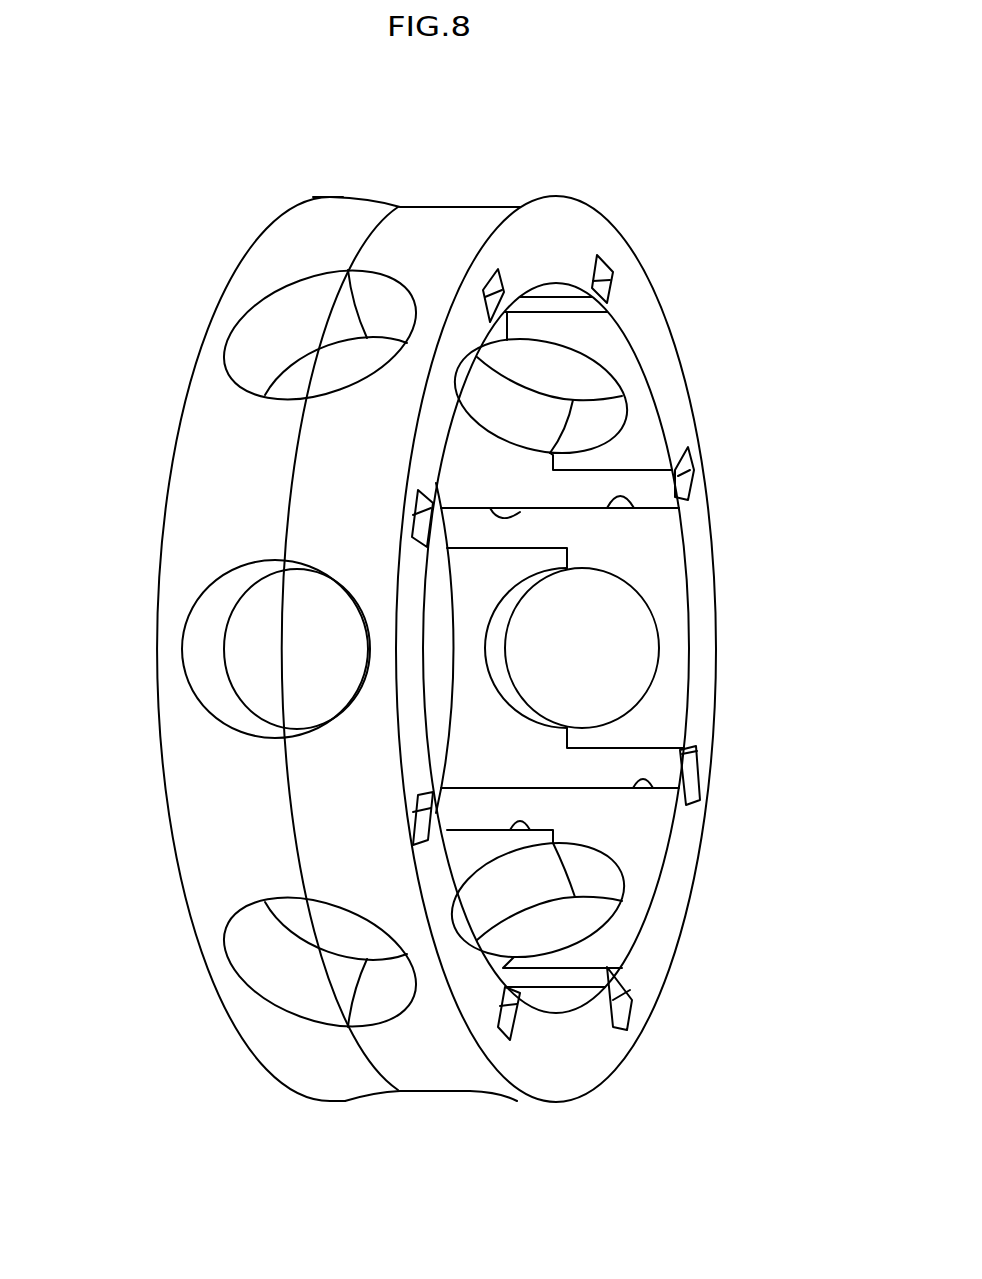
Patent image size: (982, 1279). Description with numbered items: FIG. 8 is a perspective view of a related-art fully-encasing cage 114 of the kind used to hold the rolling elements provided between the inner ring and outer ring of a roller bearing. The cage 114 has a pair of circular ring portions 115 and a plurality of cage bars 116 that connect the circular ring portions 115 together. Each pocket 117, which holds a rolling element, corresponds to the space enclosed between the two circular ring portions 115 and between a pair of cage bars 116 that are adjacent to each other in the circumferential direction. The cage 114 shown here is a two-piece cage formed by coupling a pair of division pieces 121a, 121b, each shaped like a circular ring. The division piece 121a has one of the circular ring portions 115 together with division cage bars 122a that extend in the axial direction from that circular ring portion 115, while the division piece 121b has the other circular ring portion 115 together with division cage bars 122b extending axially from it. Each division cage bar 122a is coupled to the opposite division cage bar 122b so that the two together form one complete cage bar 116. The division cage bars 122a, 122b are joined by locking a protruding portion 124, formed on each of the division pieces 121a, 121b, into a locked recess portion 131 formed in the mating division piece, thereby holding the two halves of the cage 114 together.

The fully-encasing cage 114 is at (672, 206).
The circular ring portion 115 is at (165, 620).
The cage bar 116 is at (338, 237).
The pocket 117 is at (252, 617).
The division piece 121a is at (331, 195).
The division piece 121b is at (532, 195).
The division cage bar 122a is at (260, 460).
The division cage bar 122b is at (313, 520).
The protruding portion 124 is at (608, 478).
The locked recess portion 131 is at (490, 507).